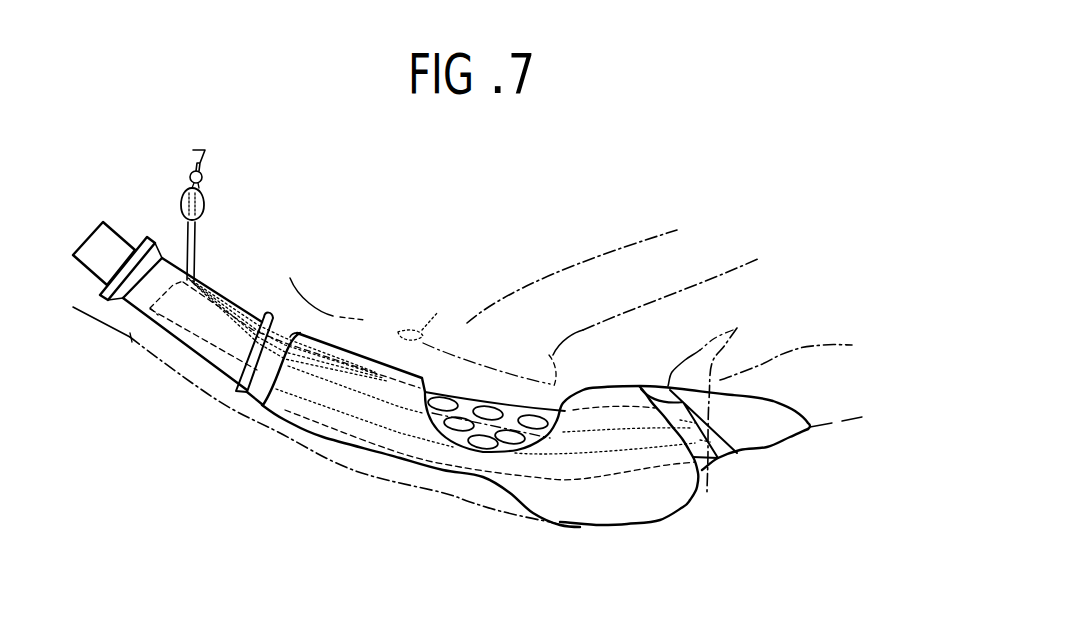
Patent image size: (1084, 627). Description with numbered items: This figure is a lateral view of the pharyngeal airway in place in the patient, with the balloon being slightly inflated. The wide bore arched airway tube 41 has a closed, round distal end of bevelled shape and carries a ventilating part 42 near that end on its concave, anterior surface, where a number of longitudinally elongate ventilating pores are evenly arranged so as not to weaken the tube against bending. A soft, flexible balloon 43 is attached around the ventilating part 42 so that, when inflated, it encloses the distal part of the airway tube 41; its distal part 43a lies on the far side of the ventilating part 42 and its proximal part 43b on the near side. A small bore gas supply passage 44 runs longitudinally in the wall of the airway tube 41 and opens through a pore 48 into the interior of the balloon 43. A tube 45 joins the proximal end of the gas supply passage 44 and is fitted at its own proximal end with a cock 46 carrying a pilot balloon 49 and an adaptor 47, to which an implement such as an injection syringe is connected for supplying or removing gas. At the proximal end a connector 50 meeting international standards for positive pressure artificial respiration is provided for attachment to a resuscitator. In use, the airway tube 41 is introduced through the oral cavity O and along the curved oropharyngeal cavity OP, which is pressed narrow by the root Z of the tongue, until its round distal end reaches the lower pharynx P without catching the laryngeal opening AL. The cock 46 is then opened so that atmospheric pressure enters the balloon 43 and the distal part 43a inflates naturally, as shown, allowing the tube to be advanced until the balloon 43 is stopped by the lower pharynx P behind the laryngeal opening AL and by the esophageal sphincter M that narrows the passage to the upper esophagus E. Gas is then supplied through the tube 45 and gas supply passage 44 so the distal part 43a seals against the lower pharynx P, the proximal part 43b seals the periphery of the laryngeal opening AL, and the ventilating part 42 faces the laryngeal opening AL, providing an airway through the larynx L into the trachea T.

The airway tube 41 is at (190, 346).
The ventilating part 42 is at (509, 402).
The balloon 43 is at (450, 473).
The distal part of the balloon 43a is at (630, 393).
The proximal part of the balloon 43b is at (340, 349).
The gas supply passage 44 is at (223, 296).
The tube 45 is at (192, 257).
The cock 46 is at (202, 178).
The adaptor 47 is at (204, 160).
The pore 48 is at (420, 337).
The pilot balloon 49 is at (204, 208).
The connector 50 is at (127, 250).
The oral cavity O is at (132, 339).
The oropharyngeal cavity OP is at (253, 412).
The lower pharynx P is at (427, 490).
The root of the tongue Z is at (340, 317).
The laryngeal opening AL is at (485, 343).
The larynx L is at (603, 287).
The trachea T is at (697, 257).
The esophageal sphincter M is at (740, 325).
The esophagus E is at (817, 397).